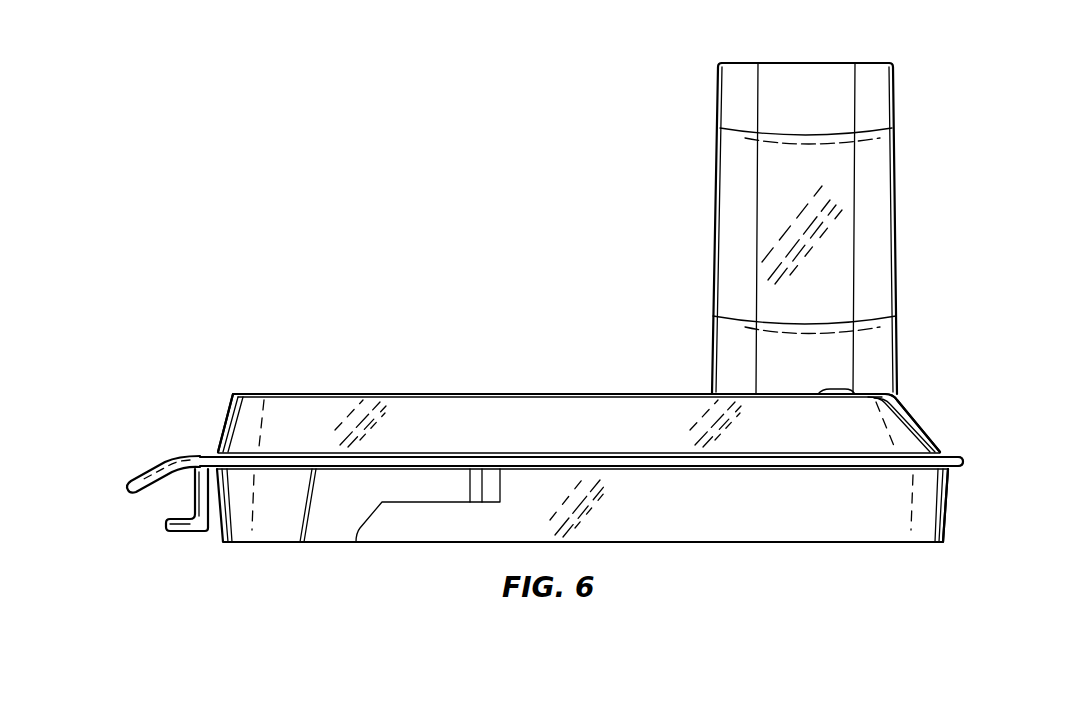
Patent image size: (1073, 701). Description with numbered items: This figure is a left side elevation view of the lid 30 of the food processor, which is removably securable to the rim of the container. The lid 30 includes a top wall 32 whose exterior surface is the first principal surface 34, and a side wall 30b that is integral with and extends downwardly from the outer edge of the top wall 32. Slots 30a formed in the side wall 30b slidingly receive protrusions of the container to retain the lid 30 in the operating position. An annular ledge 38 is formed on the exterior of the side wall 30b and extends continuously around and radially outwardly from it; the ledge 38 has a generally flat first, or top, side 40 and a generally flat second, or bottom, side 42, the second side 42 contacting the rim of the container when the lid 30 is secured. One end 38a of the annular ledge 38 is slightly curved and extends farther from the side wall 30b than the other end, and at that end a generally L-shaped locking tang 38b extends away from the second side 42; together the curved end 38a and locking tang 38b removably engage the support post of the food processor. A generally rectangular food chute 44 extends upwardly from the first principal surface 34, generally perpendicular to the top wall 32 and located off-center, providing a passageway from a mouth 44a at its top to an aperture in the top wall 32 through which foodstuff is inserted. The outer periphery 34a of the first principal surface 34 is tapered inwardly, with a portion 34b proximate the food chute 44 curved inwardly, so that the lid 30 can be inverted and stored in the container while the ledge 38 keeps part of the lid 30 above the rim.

The lid 30 is at (262, 294).
The slots 30a is at (330, 542).
The side wall 30b is at (946, 510).
The top wall 32 is at (327, 410).
The first principal surface 34 is at (435, 394).
The outer periphery 34a is at (222, 425).
The portion of outer periphery 34b is at (913, 423).
The annular ledge 38 is at (966, 462).
The end of annular ledge 38a is at (142, 472).
The locking tang 38b is at (163, 525).
The first side 40 is at (955, 455).
The second side 42 is at (955, 470).
The food chute 44 is at (897, 213).
The mouth 44a is at (825, 63).